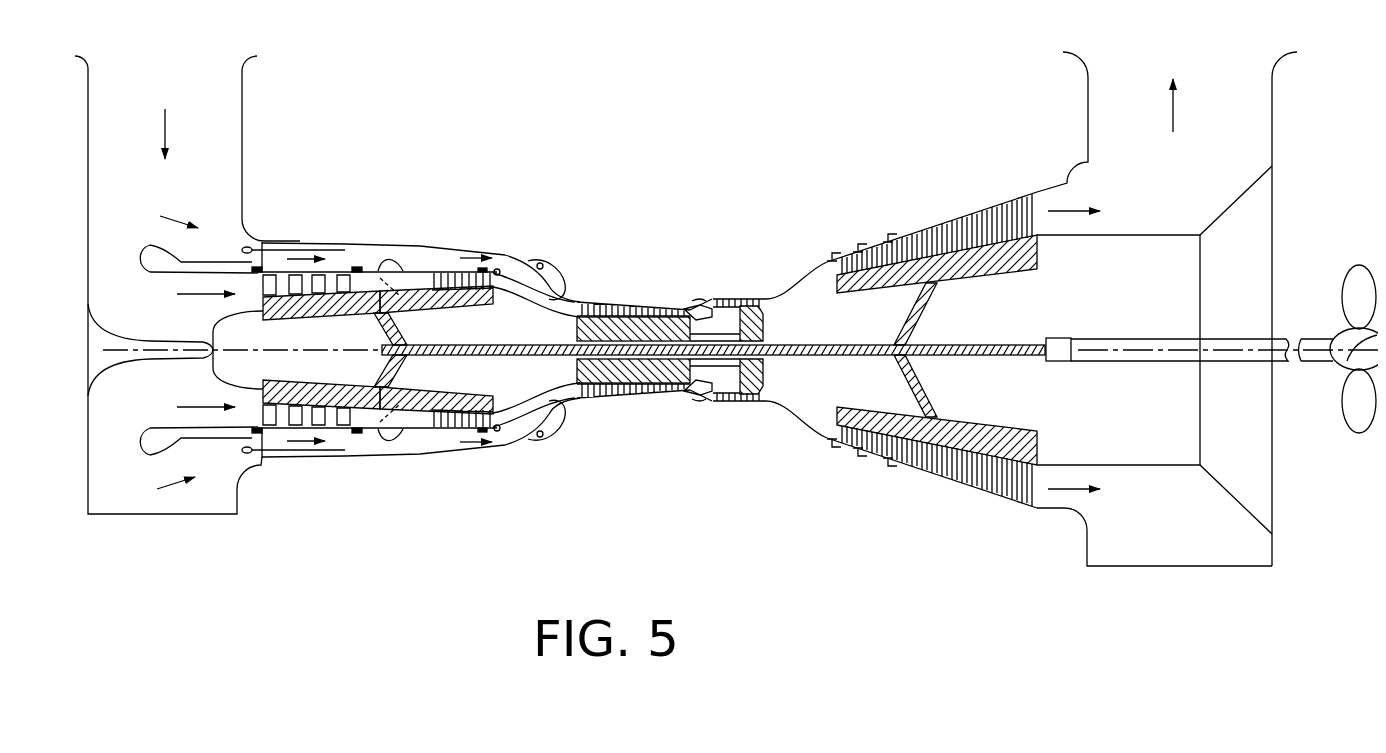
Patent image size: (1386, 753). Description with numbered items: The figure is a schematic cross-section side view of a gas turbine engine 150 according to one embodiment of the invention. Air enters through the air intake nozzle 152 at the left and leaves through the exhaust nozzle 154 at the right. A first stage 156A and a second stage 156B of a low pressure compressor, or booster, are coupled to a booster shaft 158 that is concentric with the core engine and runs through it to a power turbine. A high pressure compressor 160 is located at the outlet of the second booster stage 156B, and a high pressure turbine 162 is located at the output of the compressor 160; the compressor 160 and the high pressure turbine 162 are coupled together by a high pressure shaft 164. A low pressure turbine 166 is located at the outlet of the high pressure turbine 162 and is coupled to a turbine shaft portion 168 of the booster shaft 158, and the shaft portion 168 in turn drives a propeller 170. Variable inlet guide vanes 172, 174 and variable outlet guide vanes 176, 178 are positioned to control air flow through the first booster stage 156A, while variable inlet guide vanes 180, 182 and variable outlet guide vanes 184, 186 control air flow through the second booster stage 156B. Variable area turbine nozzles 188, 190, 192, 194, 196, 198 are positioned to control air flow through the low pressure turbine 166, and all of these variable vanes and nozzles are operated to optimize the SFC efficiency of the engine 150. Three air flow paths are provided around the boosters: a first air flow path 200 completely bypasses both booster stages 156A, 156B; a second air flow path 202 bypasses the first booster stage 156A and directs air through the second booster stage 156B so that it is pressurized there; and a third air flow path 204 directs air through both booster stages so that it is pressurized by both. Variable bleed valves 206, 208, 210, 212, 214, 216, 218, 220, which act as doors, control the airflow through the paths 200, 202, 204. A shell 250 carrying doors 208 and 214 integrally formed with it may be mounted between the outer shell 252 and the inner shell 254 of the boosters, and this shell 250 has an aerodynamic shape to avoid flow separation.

The gas turbine engine 150 is at (666, 207).
The air intake nozzle 152 is at (242, 124).
The exhaust nozzle 154 is at (1088, 122).
The first stage of low pressure compressor 156A is at (343, 322).
The second stage of low pressure compressor 156B is at (460, 308).
The booster shaft 158 is at (525, 358).
The high pressure compressor 160 is at (611, 316).
The high pressure turbine 162 is at (758, 293).
The high pressure shaft 164 is at (710, 395).
The low pressure turbine 166 is at (930, 462).
The turbine shaft portion 168 is at (968, 343).
The propeller 170 is at (1345, 272).
The variable inlet guide vane 172 is at (261, 268).
The variable inlet guide vane 174 is at (256, 478).
The variable outlet guide vane 176 is at (357, 268).
The variable outlet guide vane 178 is at (357, 436).
The variable inlet guide vane 180 is at (470, 272).
The variable inlet guide vane 182 is at (438, 432).
The variable outlet guide vane 184 is at (498, 270).
The variable outlet guide vane 186 is at (497, 432).
The variable area turbine nozzle 188 is at (834, 250).
The variable area turbine nozzle 190 is at (860, 237).
The variable area turbine nozzle 192 is at (889, 228).
The variable area turbine nozzle 194 is at (832, 452).
The variable area turbine nozzle 196 is at (858, 465).
The variable area turbine nozzle 198 is at (886, 472).
The first air flow path 200 is at (287, 247).
The second air flow path 202 is at (348, 247).
The third air flow path 204 is at (168, 276).
The variable bleed valve 206 is at (380, 270).
The variable bleed valve 208 is at (426, 273).
The variable bleed valve 210 is at (385, 440).
The variable bleed valve 212 is at (418, 432).
The variable bleed valve 214 is at (543, 265).
The variable bleed valve 216 is at (566, 266).
The variable bleed valve 218 is at (539, 438).
The variable bleed valve 220 is at (567, 437).
The shell 250 is at (457, 257).
The outer shell 252 is at (441, 273).
The inner shell 254 is at (422, 247).